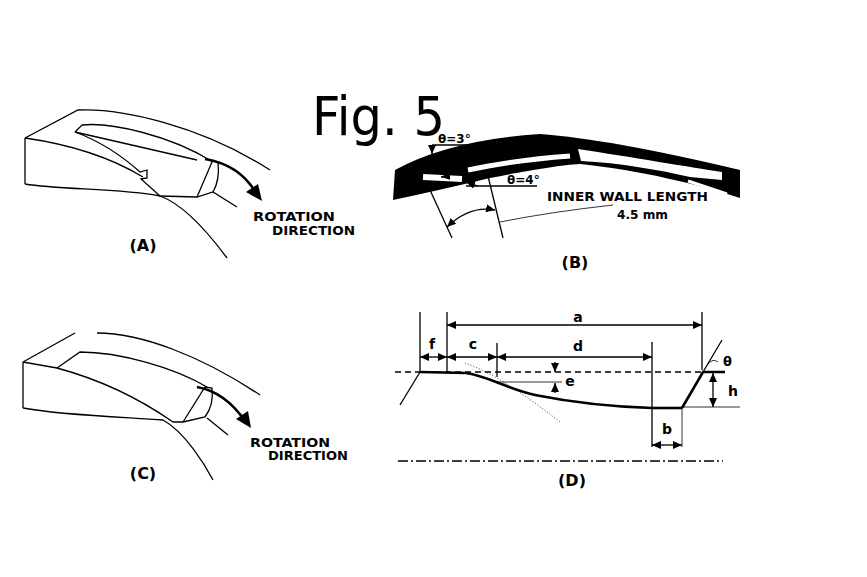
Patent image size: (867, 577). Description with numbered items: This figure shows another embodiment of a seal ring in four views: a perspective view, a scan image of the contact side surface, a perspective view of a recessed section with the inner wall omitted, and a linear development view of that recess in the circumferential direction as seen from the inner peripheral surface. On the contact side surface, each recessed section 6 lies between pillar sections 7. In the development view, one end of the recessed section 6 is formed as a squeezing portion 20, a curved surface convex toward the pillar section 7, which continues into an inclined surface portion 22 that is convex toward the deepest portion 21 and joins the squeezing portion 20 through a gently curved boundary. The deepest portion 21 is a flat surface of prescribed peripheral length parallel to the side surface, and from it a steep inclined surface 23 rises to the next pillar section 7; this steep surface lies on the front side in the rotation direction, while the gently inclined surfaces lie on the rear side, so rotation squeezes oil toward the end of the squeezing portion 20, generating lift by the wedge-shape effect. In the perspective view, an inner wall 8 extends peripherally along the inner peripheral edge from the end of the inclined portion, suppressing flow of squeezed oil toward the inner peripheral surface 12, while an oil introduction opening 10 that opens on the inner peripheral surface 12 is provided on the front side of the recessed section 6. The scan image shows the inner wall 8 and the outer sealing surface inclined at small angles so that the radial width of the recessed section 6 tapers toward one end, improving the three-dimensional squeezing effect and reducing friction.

The recessed section 6 is at (148, 380).
The pillar section 7 is at (55, 131).
The inner wall 8 is at (123, 160).
The oil introduction opening 10 is at (161, 190).
The inner peripheral surface 12 is at (73, 179).
The squeezing portion 20 is at (482, 385).
The deepest portion 21 is at (667, 405).
The inclined surface portion 22 is at (623, 399).
The steep inclined surface 23 is at (697, 396).